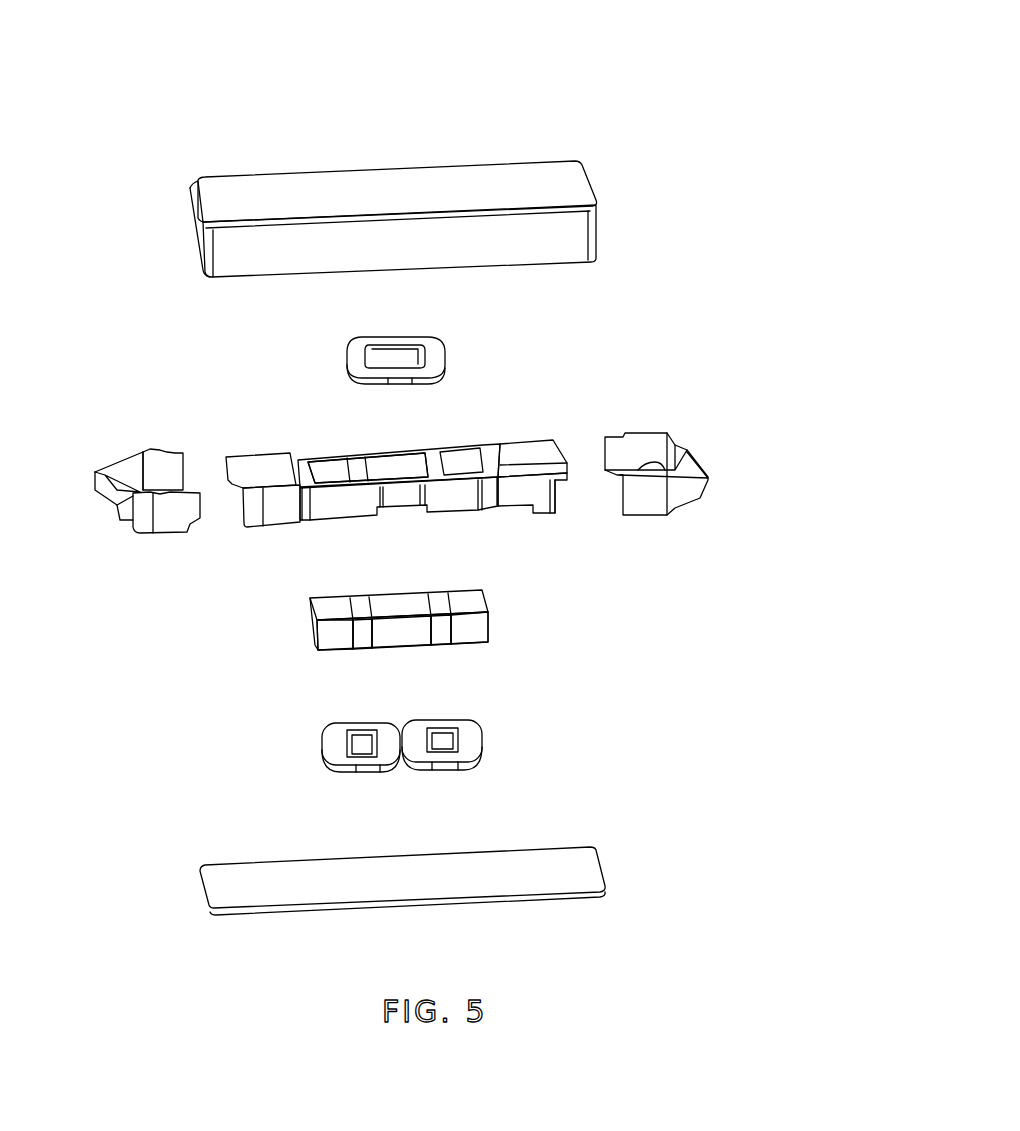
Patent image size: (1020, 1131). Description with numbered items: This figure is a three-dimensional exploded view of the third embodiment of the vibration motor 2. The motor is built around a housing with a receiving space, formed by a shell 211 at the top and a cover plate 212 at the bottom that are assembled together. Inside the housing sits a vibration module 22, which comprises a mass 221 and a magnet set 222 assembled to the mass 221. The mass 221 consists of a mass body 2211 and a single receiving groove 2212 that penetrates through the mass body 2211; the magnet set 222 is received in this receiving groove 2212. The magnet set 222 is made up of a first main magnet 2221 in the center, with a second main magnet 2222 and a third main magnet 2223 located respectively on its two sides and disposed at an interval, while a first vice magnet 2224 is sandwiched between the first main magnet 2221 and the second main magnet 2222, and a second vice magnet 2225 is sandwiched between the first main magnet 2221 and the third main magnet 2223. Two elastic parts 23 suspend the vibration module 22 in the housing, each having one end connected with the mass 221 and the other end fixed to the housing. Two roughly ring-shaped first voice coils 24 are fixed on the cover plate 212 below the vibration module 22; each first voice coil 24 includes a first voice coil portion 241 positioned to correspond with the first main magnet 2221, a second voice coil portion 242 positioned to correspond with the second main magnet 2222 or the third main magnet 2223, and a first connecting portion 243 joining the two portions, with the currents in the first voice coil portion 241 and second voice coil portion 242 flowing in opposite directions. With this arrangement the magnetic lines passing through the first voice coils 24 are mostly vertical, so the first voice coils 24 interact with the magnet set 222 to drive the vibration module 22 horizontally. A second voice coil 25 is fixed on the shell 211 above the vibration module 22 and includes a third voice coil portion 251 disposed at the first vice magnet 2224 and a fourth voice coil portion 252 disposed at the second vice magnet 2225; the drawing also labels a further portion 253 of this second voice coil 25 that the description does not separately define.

The vibration motor 2 is at (442, 45).
The shell 211 is at (570, 182).
The cover plate 212 is at (583, 872).
The vibration module 22 is at (542, 568).
The mass 221 is at (516, 486).
The mass body 2211 is at (537, 458).
The receiving groove 2212 is at (413, 465).
The magnet set 222 is at (557, 674).
The first main magnet 2221 is at (410, 635).
The second main magnet 2222 is at (475, 627).
The third main magnet 2223 is at (337, 638).
The first vice magnet 2224 is at (442, 630).
The second vice magnet 2225 is at (363, 638).
The elastic part 23 is at (102, 493).
The first voice coil 24 is at (378, 770).
The first voice coil portion 241 is at (386, 737).
The second voice coil portion 242 is at (335, 743).
The first connecting portion 243 is at (358, 760).
The second voice coil 25 is at (292, 360).
The third voice coil portion 251 is at (432, 350).
The fourth voice coil portion 252 is at (357, 360).
The coil base 253 is at (390, 373).